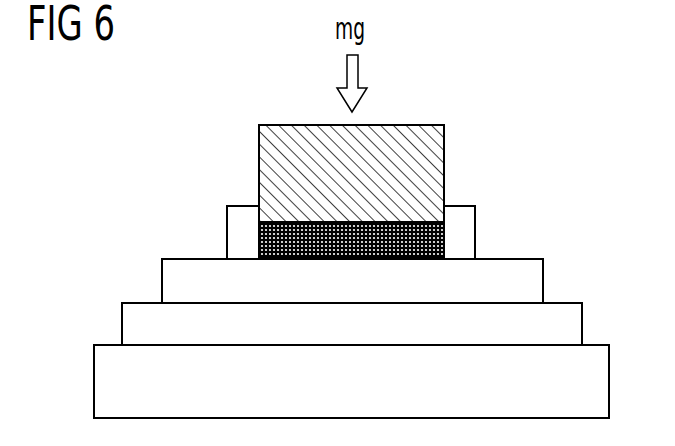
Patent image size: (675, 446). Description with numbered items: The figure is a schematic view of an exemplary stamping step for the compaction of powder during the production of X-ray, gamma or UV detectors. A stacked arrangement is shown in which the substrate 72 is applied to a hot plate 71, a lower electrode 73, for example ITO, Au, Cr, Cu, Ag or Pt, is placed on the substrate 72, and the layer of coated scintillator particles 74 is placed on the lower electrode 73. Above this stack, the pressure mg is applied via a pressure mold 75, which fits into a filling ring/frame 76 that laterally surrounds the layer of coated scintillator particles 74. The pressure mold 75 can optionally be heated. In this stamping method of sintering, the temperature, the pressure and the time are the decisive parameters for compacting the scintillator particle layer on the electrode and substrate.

The hot plate 71 is at (94, 385).
The substrate 72 is at (122, 322).
The lower electrode 73 is at (162, 279).
The layer of coated scintillator particles 74 is at (452, 239).
The pressure mold 75 is at (243, 163).
The filling ring/frame 76 is at (208, 232).